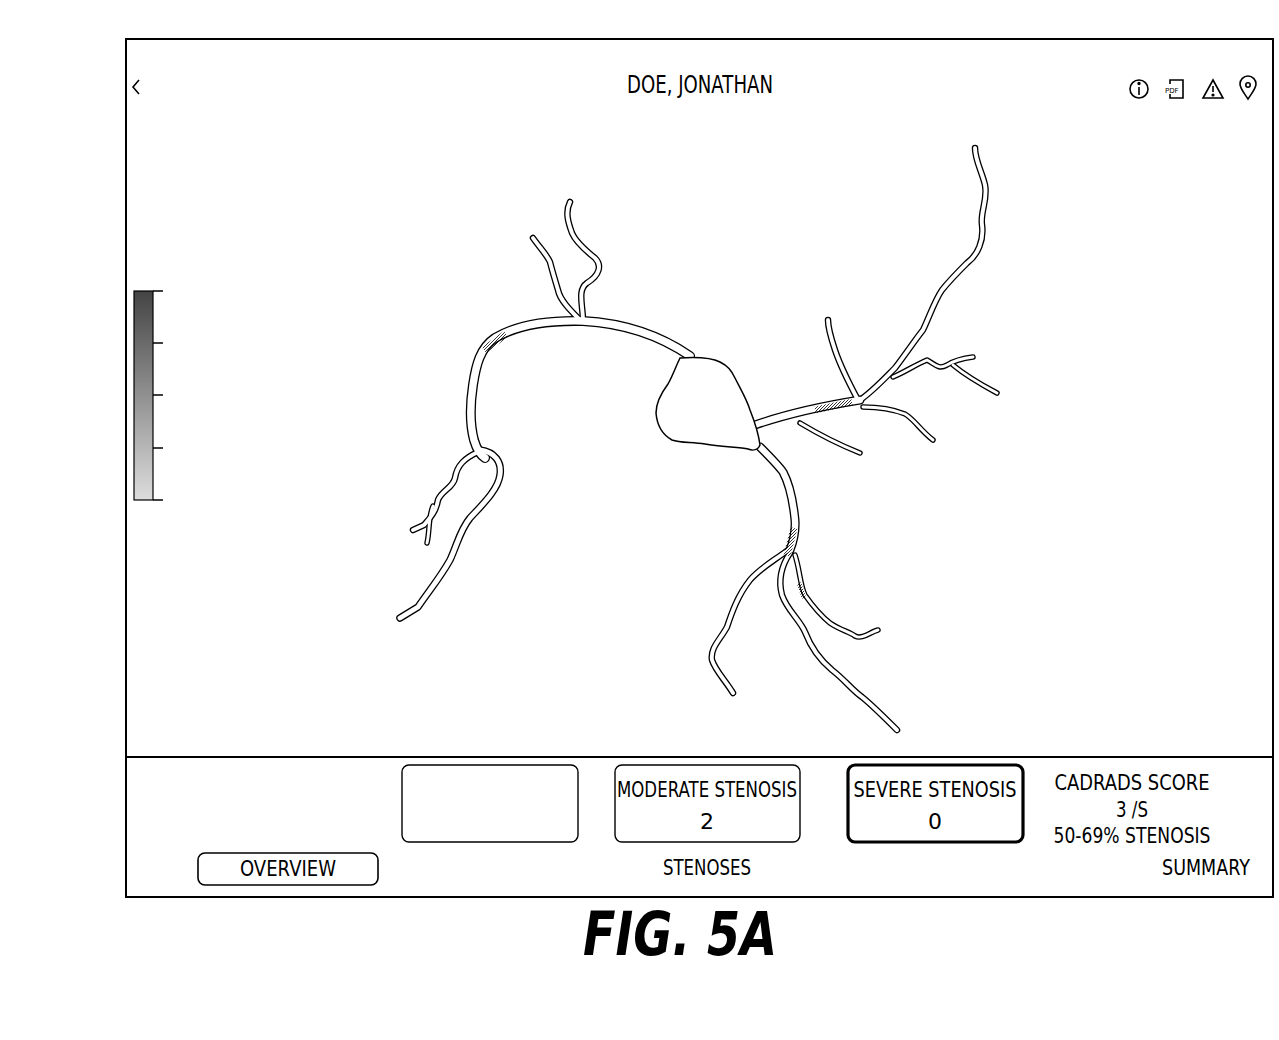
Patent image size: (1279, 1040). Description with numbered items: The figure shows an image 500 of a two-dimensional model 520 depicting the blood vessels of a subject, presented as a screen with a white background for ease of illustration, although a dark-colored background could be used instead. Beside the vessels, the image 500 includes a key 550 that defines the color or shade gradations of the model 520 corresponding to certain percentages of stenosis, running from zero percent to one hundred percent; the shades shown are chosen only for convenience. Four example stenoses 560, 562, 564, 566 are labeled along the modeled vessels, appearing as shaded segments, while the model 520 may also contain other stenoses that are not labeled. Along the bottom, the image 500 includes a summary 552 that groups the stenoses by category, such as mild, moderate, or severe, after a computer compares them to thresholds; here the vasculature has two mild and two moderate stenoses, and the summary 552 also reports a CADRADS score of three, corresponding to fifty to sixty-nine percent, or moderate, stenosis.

The image 500 is at (434, 299).
The two-dimensional model 520 is at (693, 314).
The key 550 is at (138, 222).
The summary 552 is at (392, 806).
The stenosis 560 is at (835, 398).
The stenosis 562 is at (801, 590).
The stenosis 564 is at (782, 545).
The stenosis 566 is at (499, 347).